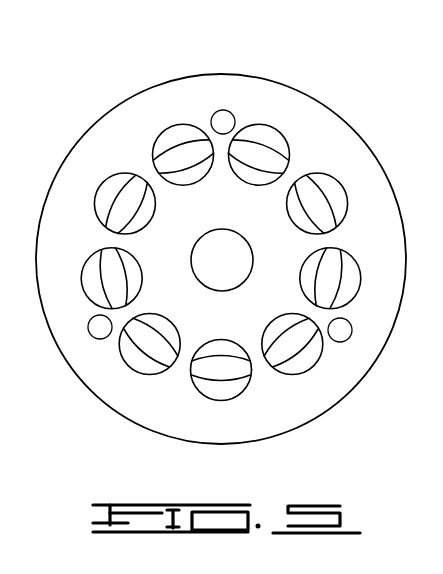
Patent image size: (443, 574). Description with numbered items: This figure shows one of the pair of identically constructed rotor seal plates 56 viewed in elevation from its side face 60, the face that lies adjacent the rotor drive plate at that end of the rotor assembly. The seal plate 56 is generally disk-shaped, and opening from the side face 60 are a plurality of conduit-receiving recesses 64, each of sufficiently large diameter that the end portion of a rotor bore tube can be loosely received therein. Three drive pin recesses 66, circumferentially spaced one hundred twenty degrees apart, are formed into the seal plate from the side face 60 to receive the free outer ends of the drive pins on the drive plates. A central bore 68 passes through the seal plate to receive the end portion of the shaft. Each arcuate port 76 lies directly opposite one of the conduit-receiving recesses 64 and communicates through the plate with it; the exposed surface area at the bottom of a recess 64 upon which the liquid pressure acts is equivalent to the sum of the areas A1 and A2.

The rotor seal plate 56 is at (210, 62).
The side face 60 is at (107, 395).
The conduit-receiving recess 64 is at (101, 197).
The drive pin recess 66 is at (225, 118).
The central bore 68 is at (230, 236).
The arcuate port 76 is at (225, 380).
The area A1 is at (213, 390).
The area A2 is at (221, 346).